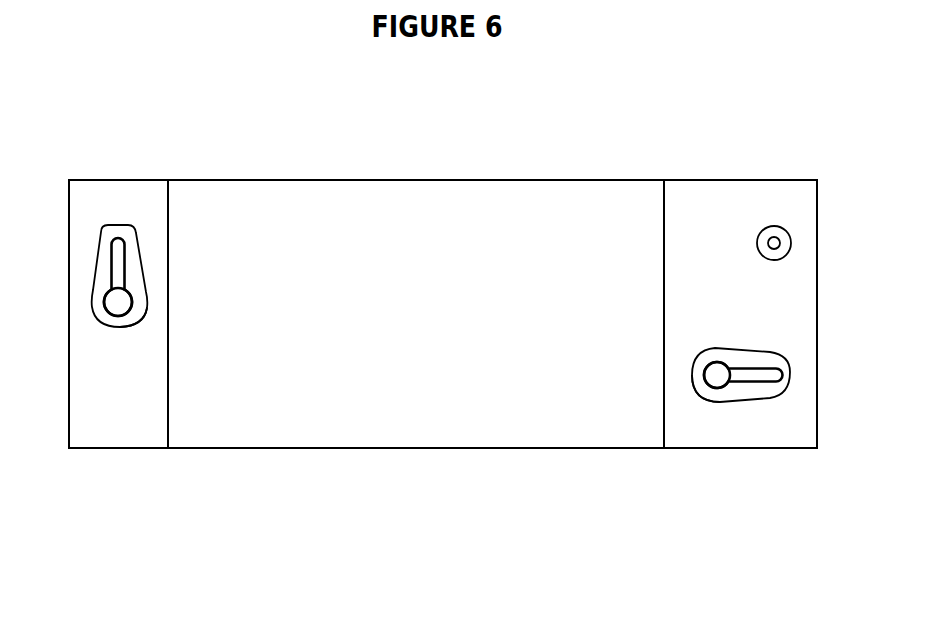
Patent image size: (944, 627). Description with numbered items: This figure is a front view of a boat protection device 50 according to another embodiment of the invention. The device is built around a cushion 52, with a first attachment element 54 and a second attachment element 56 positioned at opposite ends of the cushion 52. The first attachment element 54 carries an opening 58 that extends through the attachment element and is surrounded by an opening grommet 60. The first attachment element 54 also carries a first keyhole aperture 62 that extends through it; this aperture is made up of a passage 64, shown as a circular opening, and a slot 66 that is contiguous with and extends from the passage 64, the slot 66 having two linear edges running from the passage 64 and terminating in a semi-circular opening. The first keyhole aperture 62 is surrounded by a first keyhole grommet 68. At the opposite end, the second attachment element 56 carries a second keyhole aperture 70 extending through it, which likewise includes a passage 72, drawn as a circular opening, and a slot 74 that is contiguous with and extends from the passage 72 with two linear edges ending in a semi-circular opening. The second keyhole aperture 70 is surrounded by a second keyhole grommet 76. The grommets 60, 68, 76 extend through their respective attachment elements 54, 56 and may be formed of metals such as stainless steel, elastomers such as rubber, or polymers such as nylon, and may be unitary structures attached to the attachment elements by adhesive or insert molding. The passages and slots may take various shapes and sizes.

The boat protection device 50 is at (281, 136).
The cushion 52 is at (426, 402).
The first attachment element 54 is at (689, 193).
The second attachment element 56 is at (143, 203).
The opening 58 is at (772, 238).
The opening grommet 60 is at (785, 230).
The first keyhole aperture 62 is at (747, 403).
The passage 64 is at (720, 373).
The slot 66 is at (750, 375).
The first keyhole grommet 68 is at (730, 395).
The second keyhole aperture 70 is at (108, 252).
The passage 72 is at (118, 307).
The slot 74 is at (119, 258).
The second keyhole grommet 76 is at (132, 317).